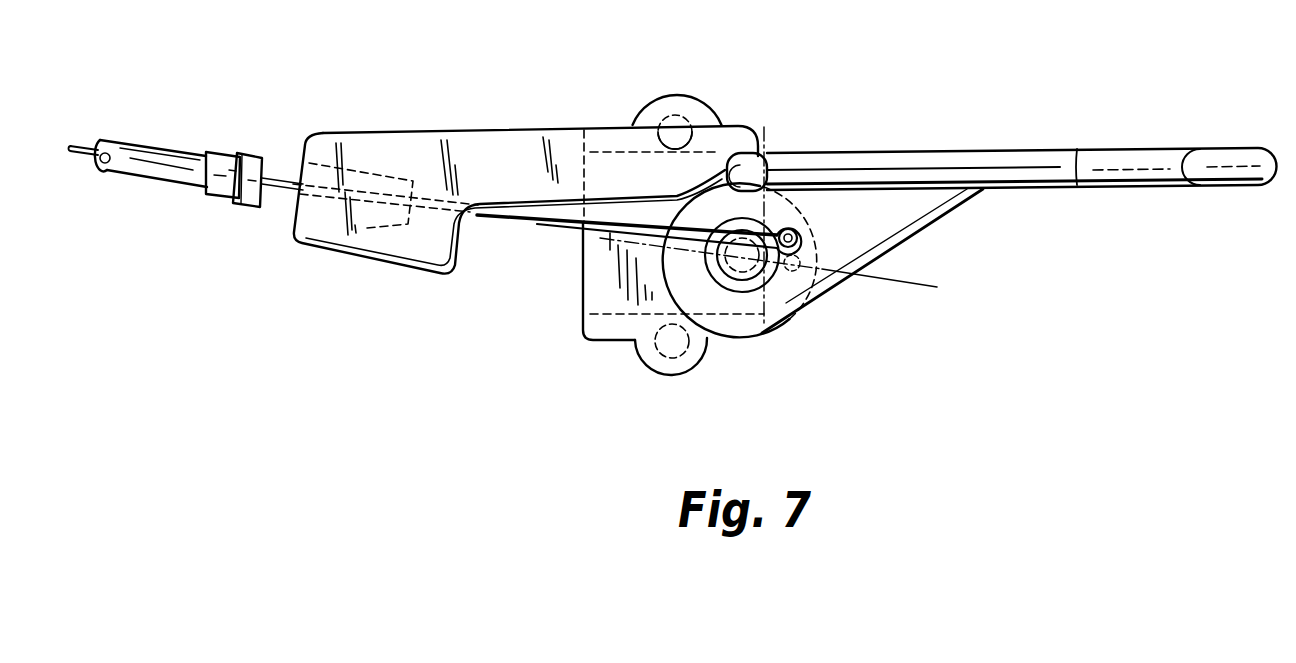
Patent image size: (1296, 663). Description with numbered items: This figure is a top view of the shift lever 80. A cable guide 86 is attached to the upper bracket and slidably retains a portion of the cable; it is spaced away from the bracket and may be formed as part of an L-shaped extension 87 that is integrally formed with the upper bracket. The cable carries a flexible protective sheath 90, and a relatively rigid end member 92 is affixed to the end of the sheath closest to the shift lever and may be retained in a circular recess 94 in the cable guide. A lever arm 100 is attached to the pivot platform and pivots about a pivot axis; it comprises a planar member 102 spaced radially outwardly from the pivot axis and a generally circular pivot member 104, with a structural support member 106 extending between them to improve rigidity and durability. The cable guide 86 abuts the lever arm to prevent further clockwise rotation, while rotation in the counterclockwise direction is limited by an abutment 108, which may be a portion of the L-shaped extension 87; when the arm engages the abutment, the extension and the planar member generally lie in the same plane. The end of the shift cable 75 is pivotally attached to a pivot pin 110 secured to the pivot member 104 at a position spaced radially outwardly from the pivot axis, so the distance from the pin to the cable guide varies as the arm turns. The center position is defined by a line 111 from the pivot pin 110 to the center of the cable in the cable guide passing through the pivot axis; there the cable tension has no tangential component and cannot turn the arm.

The shift cable 75 is at (488, 222).
The shift lever 80 is at (336, 377).
The cable guide 86 is at (365, 239).
The L-shaped extension 87 is at (500, 132).
The flexible protective sheath 90 is at (141, 150).
The rigid end member 92 is at (262, 151).
The circular recess 94 is at (337, 203).
The lever arm 100 is at (996, 144).
The planar member 102 is at (1033, 153).
The pivot member 104 is at (783, 292).
The structural support member 106 is at (870, 232).
The abutment 108 is at (723, 127).
The pivot pin 110 is at (792, 229).
The line 111 is at (937, 287).